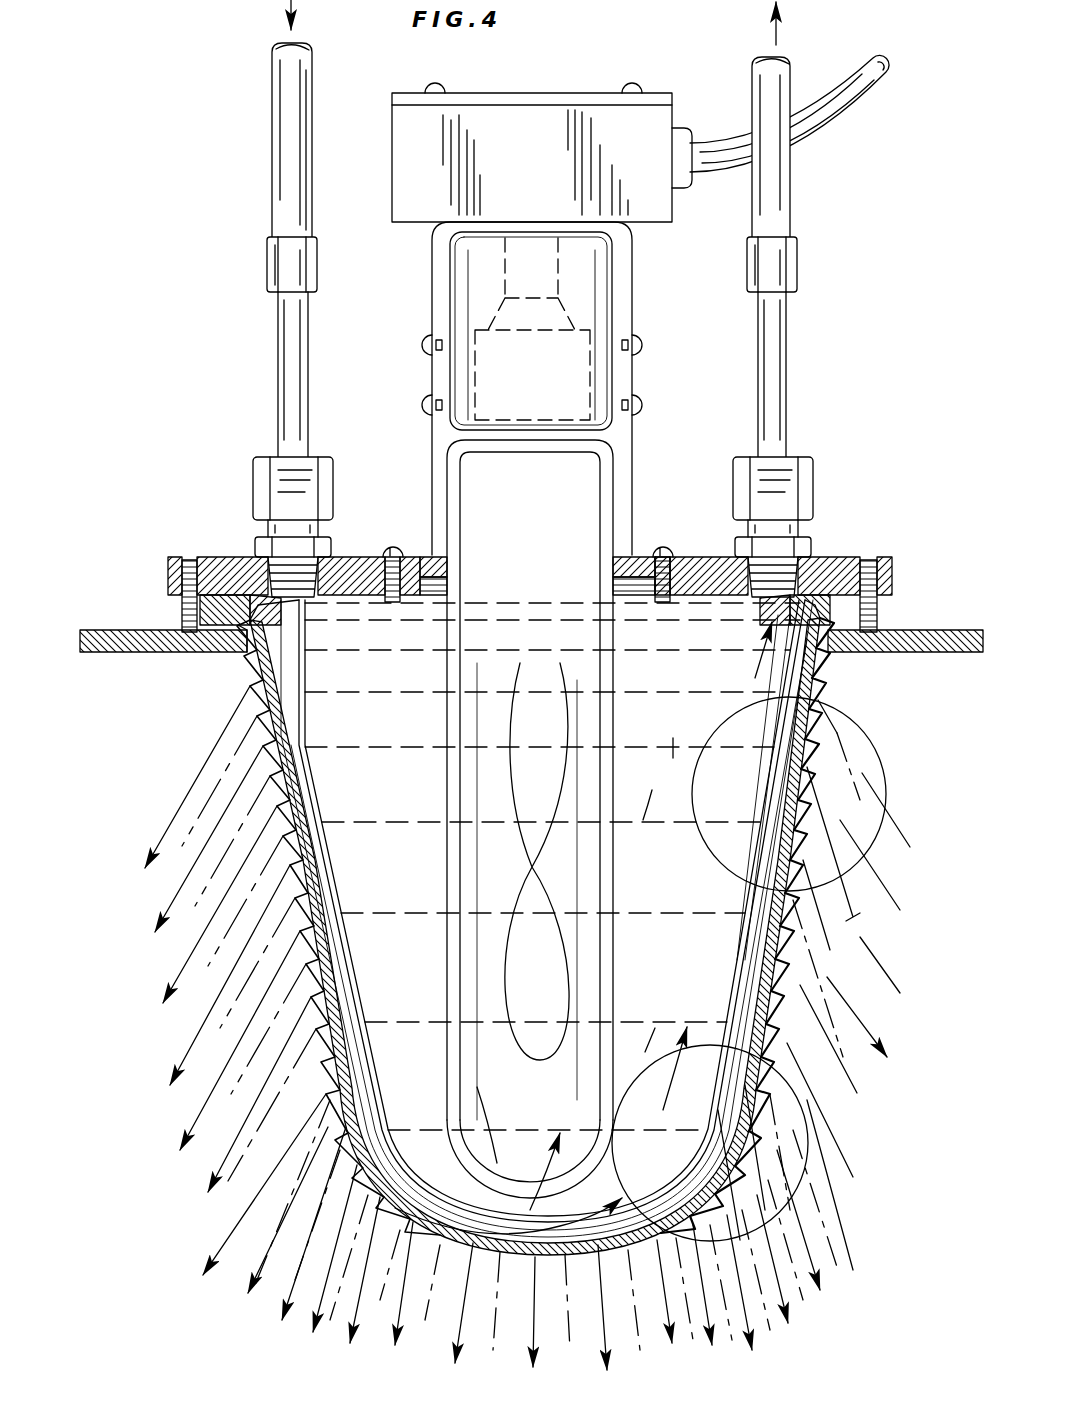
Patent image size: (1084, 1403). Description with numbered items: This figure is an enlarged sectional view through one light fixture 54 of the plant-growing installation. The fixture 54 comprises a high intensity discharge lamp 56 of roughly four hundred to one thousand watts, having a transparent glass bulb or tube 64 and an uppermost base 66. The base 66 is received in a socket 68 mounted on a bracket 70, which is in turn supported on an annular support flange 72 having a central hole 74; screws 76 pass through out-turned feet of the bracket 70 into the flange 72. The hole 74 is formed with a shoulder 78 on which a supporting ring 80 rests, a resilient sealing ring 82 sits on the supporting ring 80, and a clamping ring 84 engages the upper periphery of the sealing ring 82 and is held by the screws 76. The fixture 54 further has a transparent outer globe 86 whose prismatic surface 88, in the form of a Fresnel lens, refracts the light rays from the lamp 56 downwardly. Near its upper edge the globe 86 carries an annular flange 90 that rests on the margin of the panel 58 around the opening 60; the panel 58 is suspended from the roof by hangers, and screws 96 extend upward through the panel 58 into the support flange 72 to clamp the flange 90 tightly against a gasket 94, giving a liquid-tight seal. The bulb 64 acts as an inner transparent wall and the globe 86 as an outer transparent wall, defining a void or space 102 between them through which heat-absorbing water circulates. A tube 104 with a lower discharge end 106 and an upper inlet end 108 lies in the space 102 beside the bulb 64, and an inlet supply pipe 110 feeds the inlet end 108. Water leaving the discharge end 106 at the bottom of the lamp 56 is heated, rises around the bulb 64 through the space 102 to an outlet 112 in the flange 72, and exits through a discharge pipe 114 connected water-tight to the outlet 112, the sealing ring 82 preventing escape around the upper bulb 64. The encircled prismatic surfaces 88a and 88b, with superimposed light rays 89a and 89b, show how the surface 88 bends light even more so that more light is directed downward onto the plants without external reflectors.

The light fixture 54 is at (818, 415).
The high intensity discharge lamp 56 is at (585, 737).
The panel 58 is at (100, 630).
The opening 60 is at (238, 648).
The transparent glass bulb or tube 64 is at (448, 773).
The base 66 is at (590, 382).
The socket 68 is at (596, 283).
The bracket 70 is at (432, 272).
The annular support flange 72 is at (225, 556).
The hole 74 is at (615, 598).
The screws 76 is at (393, 545).
The shoulder 78 is at (440, 640).
The supporting ring 80 is at (453, 586).
The resilient sealing ring 82 is at (450, 570).
The clamping ring 84 is at (450, 555).
The transparent outer globe 86 is at (735, 960).
The prismatic surface 88 is at (238, 1042).
The prismatic surface 88a is at (808, 768).
The prismatic surface 88b is at (745, 1112).
The light rays 89a is at (908, 878).
The light rays 89b is at (878, 1208).
The annular flange 90 is at (840, 645).
The gasket 94 is at (838, 556).
The screws 96 is at (182, 608).
The void or space 102 is at (415, 880).
The tube 104 is at (358, 1032).
The lower discharge end 106 is at (585, 1257).
The upper inlet end 108 is at (300, 607).
The inlet supply pipe 110 is at (282, 330).
The outlet 112 is at (752, 612).
The discharge pipe 114 is at (795, 328).